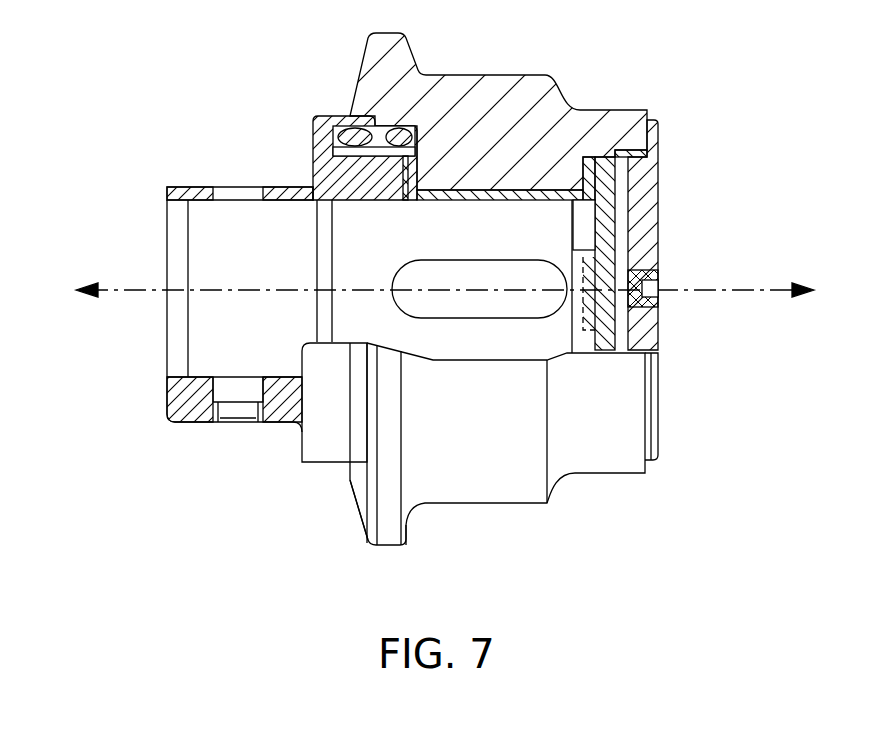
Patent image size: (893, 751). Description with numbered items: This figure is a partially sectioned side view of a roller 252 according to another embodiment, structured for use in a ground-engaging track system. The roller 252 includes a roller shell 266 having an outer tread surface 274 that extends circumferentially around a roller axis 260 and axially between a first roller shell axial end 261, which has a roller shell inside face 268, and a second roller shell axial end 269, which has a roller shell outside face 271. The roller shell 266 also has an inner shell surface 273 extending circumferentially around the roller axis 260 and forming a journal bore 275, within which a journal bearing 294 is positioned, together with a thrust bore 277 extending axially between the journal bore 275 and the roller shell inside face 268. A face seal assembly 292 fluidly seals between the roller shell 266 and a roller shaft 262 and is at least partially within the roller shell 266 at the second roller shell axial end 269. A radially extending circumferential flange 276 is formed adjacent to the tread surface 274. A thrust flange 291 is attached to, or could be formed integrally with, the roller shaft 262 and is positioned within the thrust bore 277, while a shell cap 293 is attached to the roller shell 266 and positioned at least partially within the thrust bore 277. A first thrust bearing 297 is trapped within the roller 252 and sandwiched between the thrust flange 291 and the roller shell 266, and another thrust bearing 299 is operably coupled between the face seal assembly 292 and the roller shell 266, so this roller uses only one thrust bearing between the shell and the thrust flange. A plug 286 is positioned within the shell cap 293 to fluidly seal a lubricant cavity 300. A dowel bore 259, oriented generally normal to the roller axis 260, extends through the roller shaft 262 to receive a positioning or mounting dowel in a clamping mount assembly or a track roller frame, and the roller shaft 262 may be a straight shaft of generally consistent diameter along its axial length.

The roller 252 is at (735, 120).
The dowel bore 259 is at (216, 378).
The roller axis 260 is at (750, 290).
The first roller shell axial end 261 is at (519, 399).
The roller shaft 262 is at (249, 329).
The roller shell 266 is at (460, 75).
The roller shell inside face 268 is at (660, 412).
The second roller shell axial end 269 is at (324, 475).
The roller shell outside face 271 is at (354, 505).
The inner shell surface 273 is at (440, 200).
The outer tread surface 274 is at (483, 504).
The journal bore 275 is at (481, 200).
The radially extending circumferential flange 276 is at (386, 546).
The thrust bore 277 is at (633, 164).
The plug 286 is at (646, 264).
The thrust flange 291 is at (584, 253).
The face seal assembly 292 is at (338, 155).
The shell cap 293 is at (667, 235).
The journal bearing 294 is at (523, 192).
The first thrust bearing 297 is at (583, 152).
The thrust bearing 299 is at (413, 200).
The lubricant cavity 300 is at (620, 327).